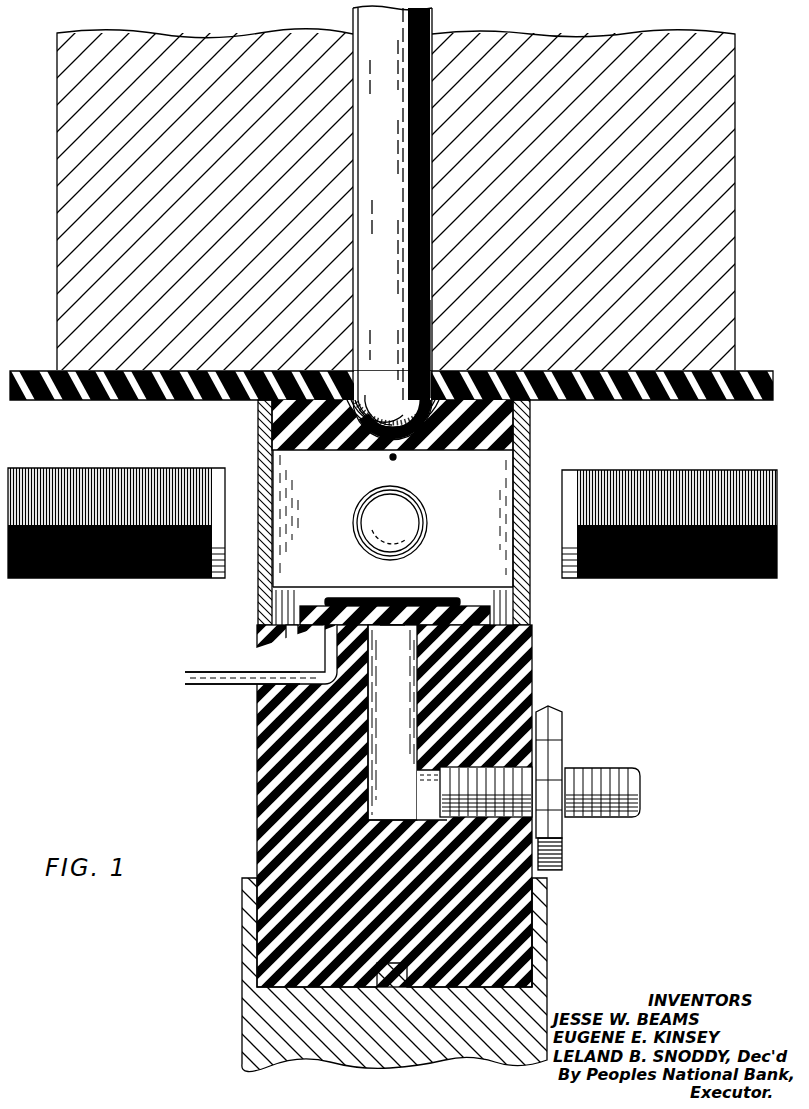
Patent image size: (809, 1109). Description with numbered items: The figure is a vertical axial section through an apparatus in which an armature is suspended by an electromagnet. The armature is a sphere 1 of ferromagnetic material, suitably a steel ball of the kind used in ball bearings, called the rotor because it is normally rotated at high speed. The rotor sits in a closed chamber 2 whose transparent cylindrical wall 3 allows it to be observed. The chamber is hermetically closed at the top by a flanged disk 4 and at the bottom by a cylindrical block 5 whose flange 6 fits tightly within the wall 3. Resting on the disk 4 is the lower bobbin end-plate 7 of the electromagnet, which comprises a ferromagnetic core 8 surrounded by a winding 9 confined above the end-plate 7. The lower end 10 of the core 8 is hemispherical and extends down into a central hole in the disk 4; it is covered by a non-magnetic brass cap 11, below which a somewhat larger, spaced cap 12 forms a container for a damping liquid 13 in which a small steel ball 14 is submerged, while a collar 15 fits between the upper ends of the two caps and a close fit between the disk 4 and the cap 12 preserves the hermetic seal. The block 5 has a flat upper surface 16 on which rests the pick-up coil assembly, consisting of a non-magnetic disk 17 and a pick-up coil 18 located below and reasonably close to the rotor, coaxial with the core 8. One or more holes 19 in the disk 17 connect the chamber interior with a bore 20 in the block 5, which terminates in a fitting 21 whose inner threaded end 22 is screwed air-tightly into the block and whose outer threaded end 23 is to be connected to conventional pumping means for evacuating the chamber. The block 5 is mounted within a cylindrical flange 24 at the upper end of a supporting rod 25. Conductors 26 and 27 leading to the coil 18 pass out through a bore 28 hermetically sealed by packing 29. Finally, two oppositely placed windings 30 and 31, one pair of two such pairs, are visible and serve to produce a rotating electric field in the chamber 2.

The sphere 1 is at (392, 523).
The closed chamber 2 is at (533, 440).
The transparent cylindrical wall 3 is at (517, 592).
The flanged disk 4 is at (270, 429).
The cylindrical block 5 is at (517, 696).
The flange 6 is at (276, 590).
The lower bobbin end-plate 7 is at (668, 401).
The ferromagnetic core 8 is at (353, 17).
The winding 9 is at (85, 230).
The lower end 10 is at (380, 411).
The cap 11 is at (427, 447).
The cap 12 is at (416, 456).
The damping liquid 13 is at (376, 450).
The small steel ball 14 is at (386, 458).
The collar 15 is at (431, 386).
The flat upper surface 16 is at (522, 684).
The disk 17 is at (479, 614).
The pick-up coil 18 is at (380, 601).
The holes 19 is at (390, 625).
The bore 20 is at (392, 722).
The fitting 21 is at (565, 736).
The inner threaded end 22 is at (442, 793).
The outer threaded end 23 is at (636, 808).
The cylindrical flange 24 is at (533, 950).
The supporting rod 25 is at (265, 1032).
The conductor 26 is at (205, 673).
The conductor 27 is at (216, 685).
The bore 28 is at (368, 675).
The packing 29 is at (262, 673).
The winding 30 is at (105, 578).
The winding 31 is at (693, 578).